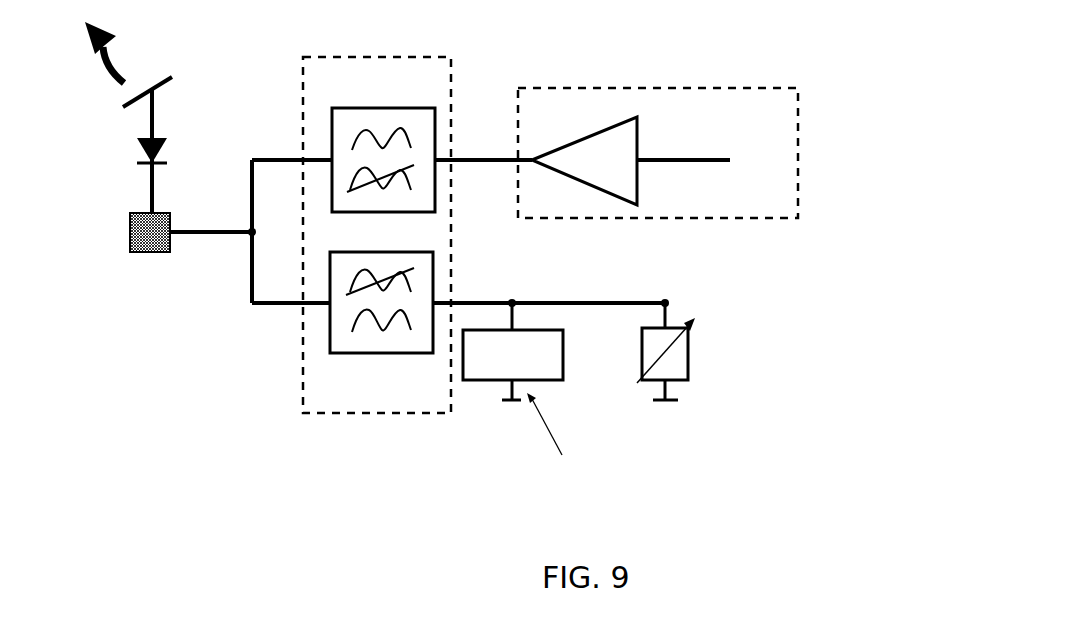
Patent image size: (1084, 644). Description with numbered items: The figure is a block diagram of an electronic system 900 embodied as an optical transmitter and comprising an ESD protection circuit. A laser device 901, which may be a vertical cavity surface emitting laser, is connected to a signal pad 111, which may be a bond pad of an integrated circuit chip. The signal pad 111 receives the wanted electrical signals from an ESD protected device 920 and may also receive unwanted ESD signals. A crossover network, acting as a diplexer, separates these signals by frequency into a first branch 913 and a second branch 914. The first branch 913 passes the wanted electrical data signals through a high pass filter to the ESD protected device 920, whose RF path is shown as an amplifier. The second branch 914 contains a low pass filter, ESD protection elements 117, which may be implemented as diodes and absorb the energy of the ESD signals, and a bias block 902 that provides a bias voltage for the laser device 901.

The electronic system 900 is at (498, 276).
The laser device 901 is at (136, 150).
The signal pad 111 is at (144, 256).
The first branch 913 is at (272, 137).
The second branch 914 is at (272, 325).
The ESD protection elements 117 is at (472, 382).
The bias block 902 is at (691, 380).
The ESD protected device 920 is at (798, 167).